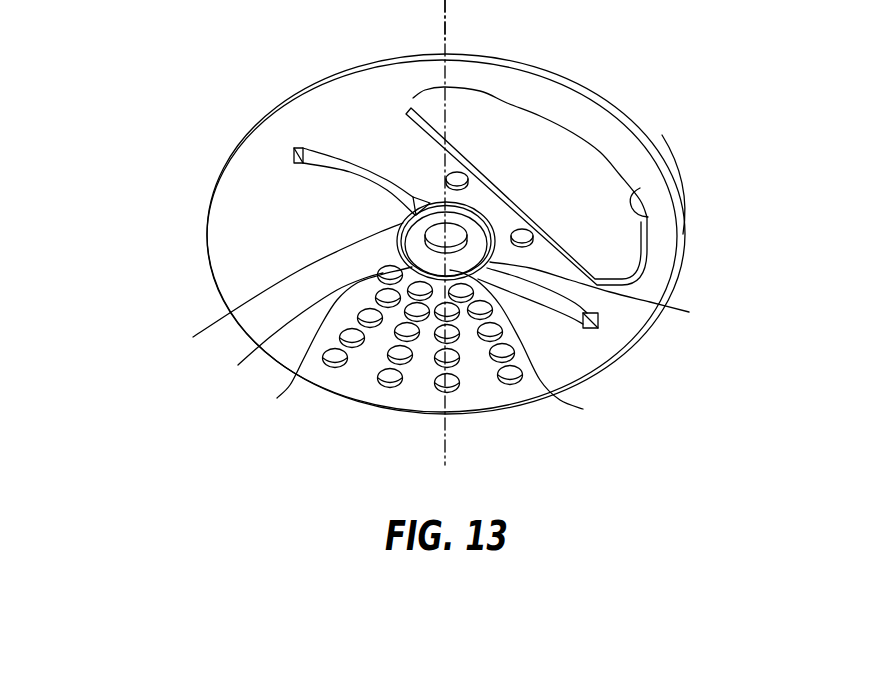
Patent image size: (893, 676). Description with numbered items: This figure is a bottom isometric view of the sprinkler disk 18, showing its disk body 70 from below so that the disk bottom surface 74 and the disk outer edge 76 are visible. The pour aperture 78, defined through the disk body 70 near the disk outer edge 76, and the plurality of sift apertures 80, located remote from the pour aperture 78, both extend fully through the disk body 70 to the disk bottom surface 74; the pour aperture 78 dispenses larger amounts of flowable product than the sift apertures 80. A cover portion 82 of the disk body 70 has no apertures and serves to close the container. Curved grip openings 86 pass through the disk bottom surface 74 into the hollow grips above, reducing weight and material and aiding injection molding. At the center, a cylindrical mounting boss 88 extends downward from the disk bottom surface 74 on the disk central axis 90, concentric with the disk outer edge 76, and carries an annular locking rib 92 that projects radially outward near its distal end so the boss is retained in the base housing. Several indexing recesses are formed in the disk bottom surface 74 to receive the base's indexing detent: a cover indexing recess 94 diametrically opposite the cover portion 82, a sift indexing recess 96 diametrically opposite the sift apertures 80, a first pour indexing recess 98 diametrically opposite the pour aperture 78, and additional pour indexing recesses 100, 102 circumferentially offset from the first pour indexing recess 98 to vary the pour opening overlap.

The sprinkler disk 18 is at (160, 120).
The disk body 70 is at (214, 232).
The disk bottom surface 74 is at (409, 236).
The disk outer edge 76 is at (661, 156).
The pour aperture 78 is at (648, 216).
The sift apertures 80 is at (388, 355).
The cover portion 82 is at (277, 243).
The grip openings 86 is at (318, 150).
The mounting boss 88 is at (285, 288).
The disk central axis 90 is at (450, 27).
The locking rib 92 is at (601, 293).
The cover indexing recess 94 is at (534, 239).
The sift indexing recess 96 is at (462, 172).
The first pour indexing recess 98 is at (299, 326).
The pour indexing recess 100 is at (328, 338).
The pour indexing recess 102 is at (531, 346).